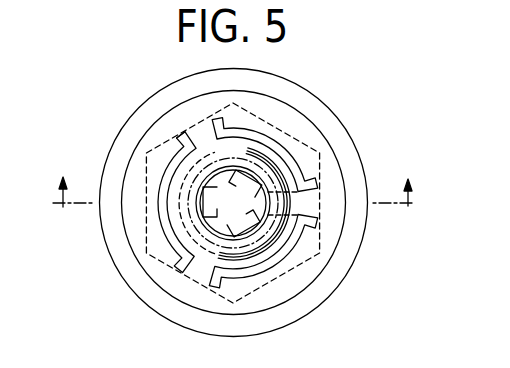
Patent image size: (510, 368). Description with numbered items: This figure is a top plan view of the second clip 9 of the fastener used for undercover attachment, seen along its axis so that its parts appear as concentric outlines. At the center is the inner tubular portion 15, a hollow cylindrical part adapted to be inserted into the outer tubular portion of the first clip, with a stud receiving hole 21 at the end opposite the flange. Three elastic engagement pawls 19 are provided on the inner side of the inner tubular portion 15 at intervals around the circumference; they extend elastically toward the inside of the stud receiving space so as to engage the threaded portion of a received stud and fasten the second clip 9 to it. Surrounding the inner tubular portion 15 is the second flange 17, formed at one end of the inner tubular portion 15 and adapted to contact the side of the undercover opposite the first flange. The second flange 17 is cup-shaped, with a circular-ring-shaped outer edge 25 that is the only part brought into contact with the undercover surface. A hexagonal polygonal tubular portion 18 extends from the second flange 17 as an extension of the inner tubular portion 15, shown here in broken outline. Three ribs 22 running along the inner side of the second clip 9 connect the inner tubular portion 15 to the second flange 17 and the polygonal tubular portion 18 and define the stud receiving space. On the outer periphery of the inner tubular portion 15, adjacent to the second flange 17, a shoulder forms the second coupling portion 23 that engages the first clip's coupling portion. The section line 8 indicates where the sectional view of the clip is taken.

The section line 8- 8 is at (235, 185).
The second clip 9 is at (376, 107).
The inner tubular portion 15 is at (276, 151).
The second flange 17 is at (158, 309).
The polygonal tubular portion 18 is at (323, 150).
The elastic engagement pawls 19 is at (215, 203).
The stud receiving hole 21 is at (224, 177).
The ribs 22 is at (213, 122).
The second coupling portion 23 is at (156, 209).
The outer edge 25 is at (322, 289).